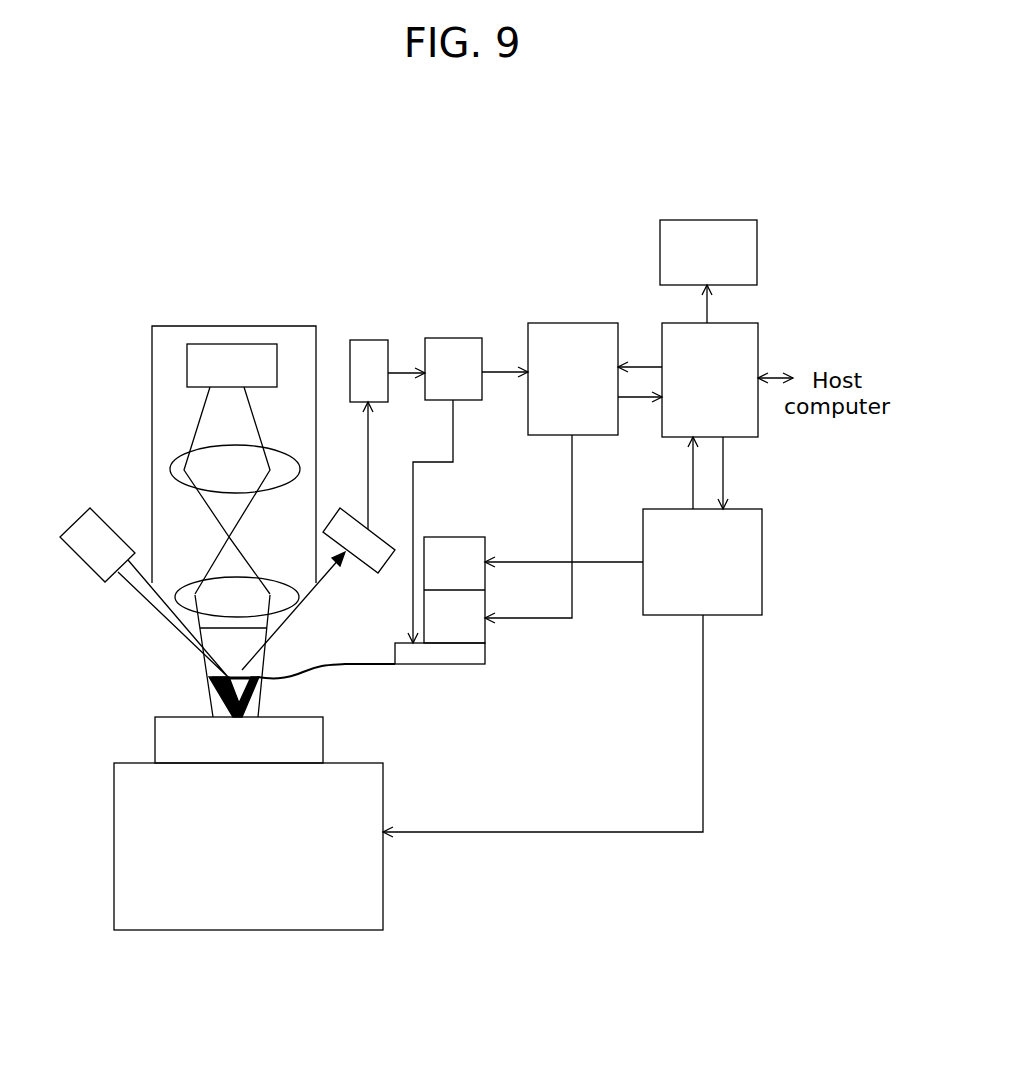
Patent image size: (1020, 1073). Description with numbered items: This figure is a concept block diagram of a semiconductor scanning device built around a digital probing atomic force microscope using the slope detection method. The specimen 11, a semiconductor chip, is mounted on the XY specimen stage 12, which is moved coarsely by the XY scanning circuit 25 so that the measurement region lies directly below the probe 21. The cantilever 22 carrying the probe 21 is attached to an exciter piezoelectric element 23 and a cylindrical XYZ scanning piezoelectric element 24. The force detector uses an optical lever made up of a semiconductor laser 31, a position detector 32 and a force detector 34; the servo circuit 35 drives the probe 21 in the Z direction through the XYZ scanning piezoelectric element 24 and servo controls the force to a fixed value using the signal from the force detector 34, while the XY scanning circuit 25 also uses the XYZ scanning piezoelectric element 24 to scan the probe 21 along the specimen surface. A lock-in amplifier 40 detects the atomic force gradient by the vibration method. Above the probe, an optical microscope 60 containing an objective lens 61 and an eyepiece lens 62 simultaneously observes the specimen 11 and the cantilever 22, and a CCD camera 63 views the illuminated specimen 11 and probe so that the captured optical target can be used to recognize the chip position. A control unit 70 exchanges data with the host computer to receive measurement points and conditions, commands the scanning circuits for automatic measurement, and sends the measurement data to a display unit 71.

The specimen 11 is at (155, 741).
The XY specimen stage 12 is at (115, 835).
The probe 21 is at (223, 692).
The cantilever 22 is at (345, 665).
The exciter piezoelectric element 23 is at (472, 660).
The XYZ scanning piezoelectric element 24 is at (463, 537).
The XY scanning circuit 25 is at (762, 555).
The semiconductor laser 31 is at (58, 533).
The position detector 32 is at (358, 568).
The force detector 34 is at (372, 340).
The servo circuit 35 is at (577, 323).
The lock-in amplifier 40 is at (445, 338).
The optical microscope 60 is at (240, 326).
The objective lens 61 is at (173, 460).
The eyepiece lens 62 is at (203, 579).
The CCD camera 63 is at (193, 362).
The control computer 70 is at (758, 340).
The display 71 is at (702, 220).